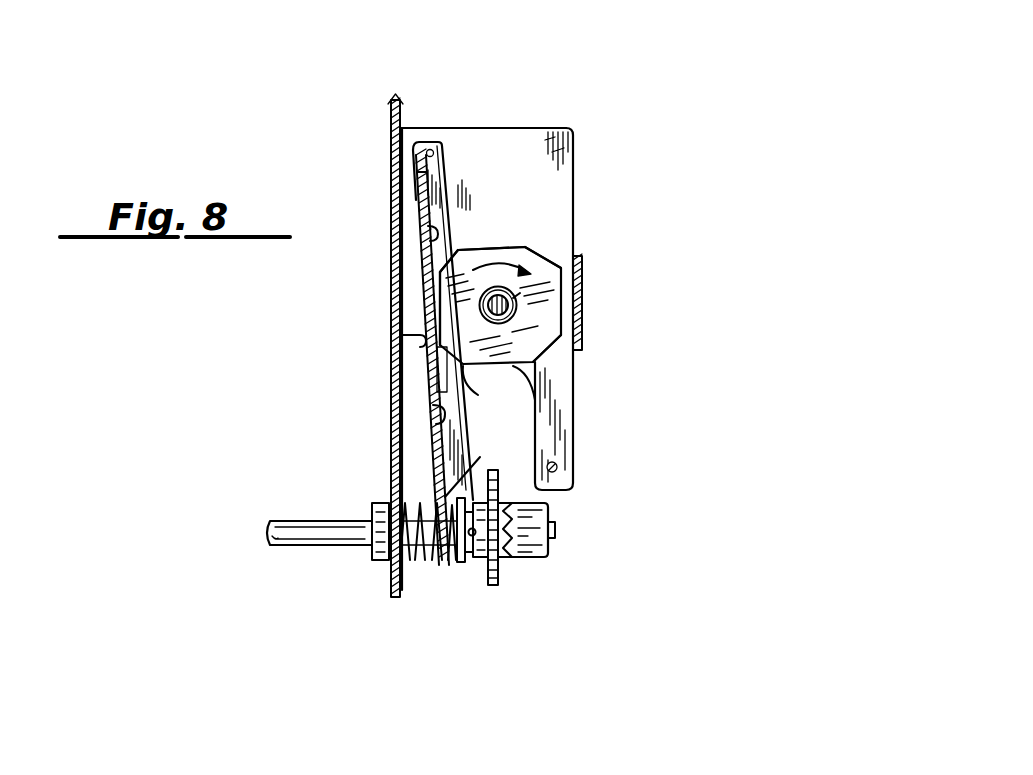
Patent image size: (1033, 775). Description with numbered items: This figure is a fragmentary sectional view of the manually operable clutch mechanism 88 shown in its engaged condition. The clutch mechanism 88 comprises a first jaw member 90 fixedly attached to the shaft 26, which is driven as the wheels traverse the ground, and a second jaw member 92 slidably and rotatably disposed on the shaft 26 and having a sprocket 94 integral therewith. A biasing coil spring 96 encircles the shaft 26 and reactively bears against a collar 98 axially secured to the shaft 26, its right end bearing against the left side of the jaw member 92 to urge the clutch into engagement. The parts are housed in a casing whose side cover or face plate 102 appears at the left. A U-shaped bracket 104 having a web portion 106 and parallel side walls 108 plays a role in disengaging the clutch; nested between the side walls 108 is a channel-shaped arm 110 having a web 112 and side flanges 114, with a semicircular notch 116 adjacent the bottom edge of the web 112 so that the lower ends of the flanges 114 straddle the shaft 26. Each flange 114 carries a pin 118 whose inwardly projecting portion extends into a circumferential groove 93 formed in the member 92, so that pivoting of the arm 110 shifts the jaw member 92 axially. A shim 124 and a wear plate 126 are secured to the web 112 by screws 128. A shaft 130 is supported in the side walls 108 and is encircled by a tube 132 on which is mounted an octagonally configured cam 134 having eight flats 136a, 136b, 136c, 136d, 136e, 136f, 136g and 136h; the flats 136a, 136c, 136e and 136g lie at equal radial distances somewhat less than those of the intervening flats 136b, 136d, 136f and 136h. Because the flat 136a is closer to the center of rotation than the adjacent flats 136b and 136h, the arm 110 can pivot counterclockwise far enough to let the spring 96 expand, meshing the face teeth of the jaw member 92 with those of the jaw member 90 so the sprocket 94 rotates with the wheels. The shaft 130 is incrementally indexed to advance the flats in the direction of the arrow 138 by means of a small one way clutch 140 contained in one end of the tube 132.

The shaft 26 is at (277, 521).
The clutch mechanism 88 is at (560, 509).
The first jaw member 90 is at (550, 549).
The second jaw member 92 is at (486, 560).
The circumferential groove 93 is at (470, 560).
The sprocket 94 is at (498, 579).
The biasing coil spring 96 is at (405, 572).
The collar 98 is at (374, 556).
The side cover or face plate 102 is at (429, 149).
The U-shaped bracket 104 is at (528, 122).
The web portion 106 is at (422, 341).
The side walls 108 is at (557, 150).
The channel-shaped arm 110 is at (457, 160).
The web 112 is at (420, 176).
The side flanges 114 is at (434, 192).
The semicircular notch 116 is at (481, 465).
The pin 118 is at (447, 562).
The shim 124 is at (437, 358).
The wear plate 126 is at (432, 380).
The screws 128 is at (432, 230).
The shaft 130 is at (517, 305).
The tube 132 is at (515, 316).
The octagonally configured cam 134 is at (545, 237).
The flat 136a is at (440, 295).
The flat 136b is at (444, 268).
The flat 136c is at (482, 246).
The flat 136d is at (548, 262).
The flat 136e is at (583, 280).
The flat 136f is at (552, 342).
The flat 136g is at (540, 392).
The flat 136h is at (493, 393).
The arrow 138 is at (500, 246).
The one way clutch 140 is at (520, 292).